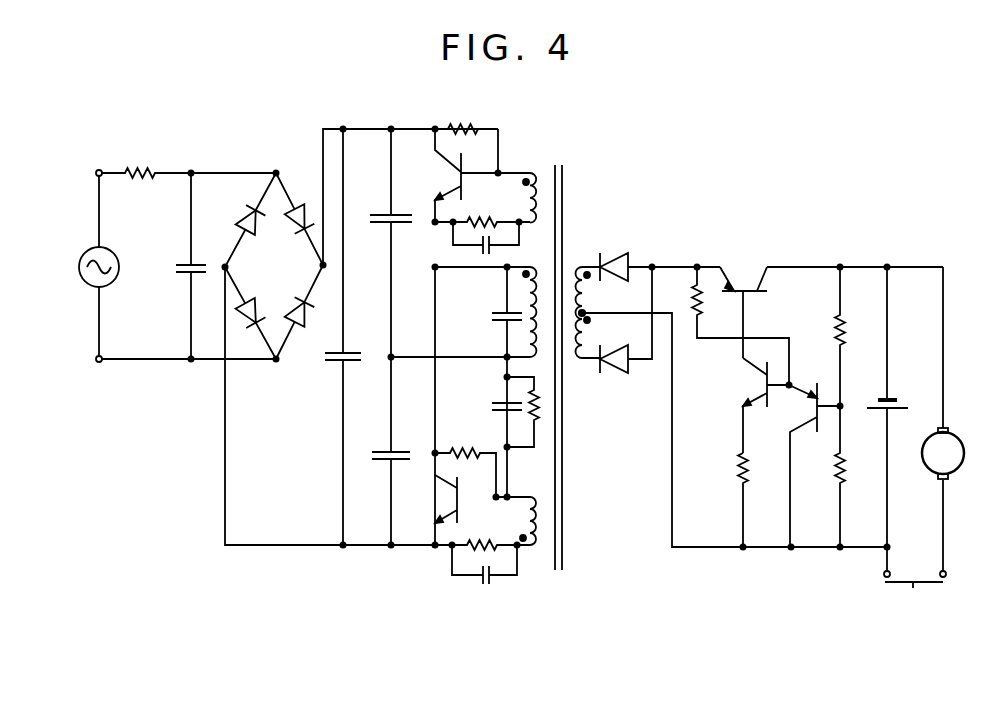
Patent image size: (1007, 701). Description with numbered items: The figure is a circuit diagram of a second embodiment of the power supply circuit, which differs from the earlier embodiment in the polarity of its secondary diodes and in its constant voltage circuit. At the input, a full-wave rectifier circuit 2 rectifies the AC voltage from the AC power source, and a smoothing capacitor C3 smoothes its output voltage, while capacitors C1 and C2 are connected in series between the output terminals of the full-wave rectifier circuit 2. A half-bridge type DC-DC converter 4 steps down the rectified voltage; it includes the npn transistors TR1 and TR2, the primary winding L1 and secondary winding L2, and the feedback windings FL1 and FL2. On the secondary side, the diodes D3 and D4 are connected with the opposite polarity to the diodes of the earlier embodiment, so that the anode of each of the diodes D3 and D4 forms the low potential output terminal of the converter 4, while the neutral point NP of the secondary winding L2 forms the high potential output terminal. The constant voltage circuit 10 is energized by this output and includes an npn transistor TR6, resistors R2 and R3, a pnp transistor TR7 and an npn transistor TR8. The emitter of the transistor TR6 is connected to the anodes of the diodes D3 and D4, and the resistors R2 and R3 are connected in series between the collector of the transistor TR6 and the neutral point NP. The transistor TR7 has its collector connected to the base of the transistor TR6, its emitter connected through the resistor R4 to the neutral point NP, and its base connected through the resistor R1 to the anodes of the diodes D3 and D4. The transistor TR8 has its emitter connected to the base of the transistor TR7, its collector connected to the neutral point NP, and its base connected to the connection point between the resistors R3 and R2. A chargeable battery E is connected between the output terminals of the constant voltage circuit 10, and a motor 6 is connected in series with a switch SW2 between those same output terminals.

The full-wave rectifier circuit 2 is at (252, 192).
The half-bridge type DC-DC converter 4 is at (574, 149).
The constant voltage circuit 10 is at (756, 222).
The motor 6 is at (965, 455).
The capacitor C1 is at (364, 216).
The capacitor C2 is at (365, 456).
The smoothing capacitor C3 is at (320, 358).
The npn transistor TR1 is at (451, 180).
The npn transistor TR2 is at (452, 504).
The feedback winding FL1 is at (547, 165).
The feedback winding FL2 is at (532, 553).
The primary winding L1 is at (526, 291).
The secondary winding L2 is at (575, 347).
The neutral point NP is at (586, 304).
The diode D3 is at (608, 254).
The diode D4 is at (613, 375).
The resistor R1 is at (690, 298).
The resistor R2 is at (843, 340).
The resistor R3 is at (847, 478).
The resistor R4 is at (750, 478).
The npn transistor TR6 is at (743, 271).
The pnp transistor TR7 is at (761, 385).
The npn transistor TR8 is at (804, 382).
The chargeable battery E is at (906, 408).
The switch SW2 is at (917, 590).